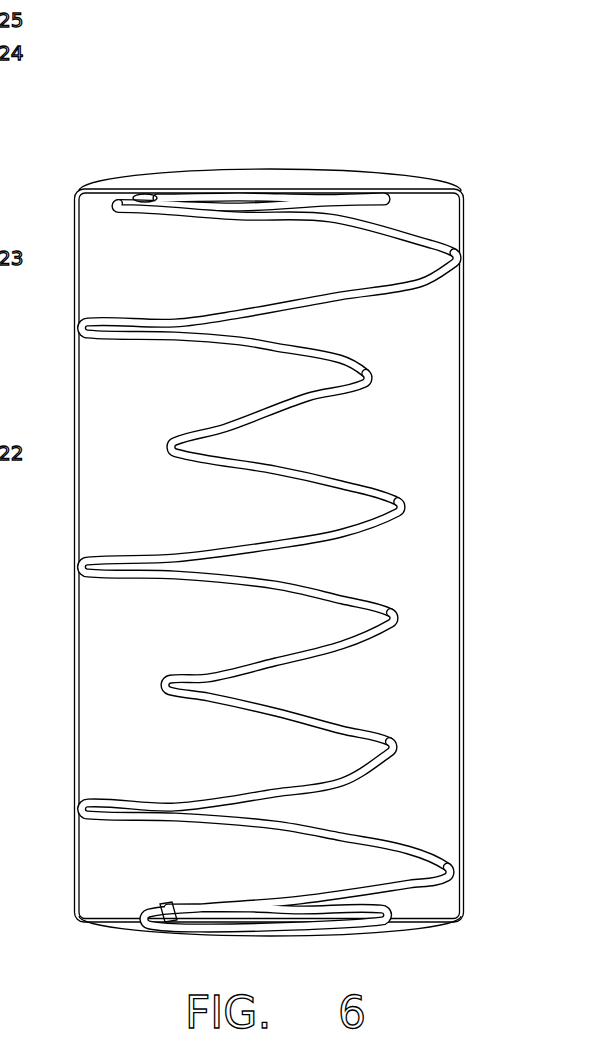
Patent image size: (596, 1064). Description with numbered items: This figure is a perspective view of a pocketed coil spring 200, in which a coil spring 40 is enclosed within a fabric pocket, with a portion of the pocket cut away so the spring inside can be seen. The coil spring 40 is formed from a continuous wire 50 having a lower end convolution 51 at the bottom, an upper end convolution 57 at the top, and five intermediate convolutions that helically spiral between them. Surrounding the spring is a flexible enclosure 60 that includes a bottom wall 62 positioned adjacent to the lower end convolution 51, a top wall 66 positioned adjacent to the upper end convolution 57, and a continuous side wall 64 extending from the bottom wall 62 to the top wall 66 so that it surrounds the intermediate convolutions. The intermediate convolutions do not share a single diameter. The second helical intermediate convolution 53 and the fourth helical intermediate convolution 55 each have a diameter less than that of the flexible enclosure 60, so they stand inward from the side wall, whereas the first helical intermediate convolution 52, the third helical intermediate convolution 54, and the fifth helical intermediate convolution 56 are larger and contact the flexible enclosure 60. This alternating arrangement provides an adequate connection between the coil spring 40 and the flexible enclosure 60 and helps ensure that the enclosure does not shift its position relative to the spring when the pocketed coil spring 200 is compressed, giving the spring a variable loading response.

The pocketed coil spring 200 is at (146, 98).
The flexible enclosure 60 is at (465, 332).
The continuous side wall 64 is at (466, 482).
The top wall 66 is at (372, 183).
The bottom wall 62 is at (410, 930).
The coil spring 40 is at (251, 526).
The continuous wire 50 is at (267, 651).
The lower end convolution 51 is at (195, 903).
The first helical intermediate convolution 52 is at (88, 806).
The second helical intermediate convolution 53 is at (163, 685).
The third helical intermediate convolution 54 is at (80, 567).
The fourth helical intermediate convolution 55 is at (168, 447).
The fifth helical intermediate convolution 56 is at (80, 328).
The upper end convolution 57 is at (112, 206).